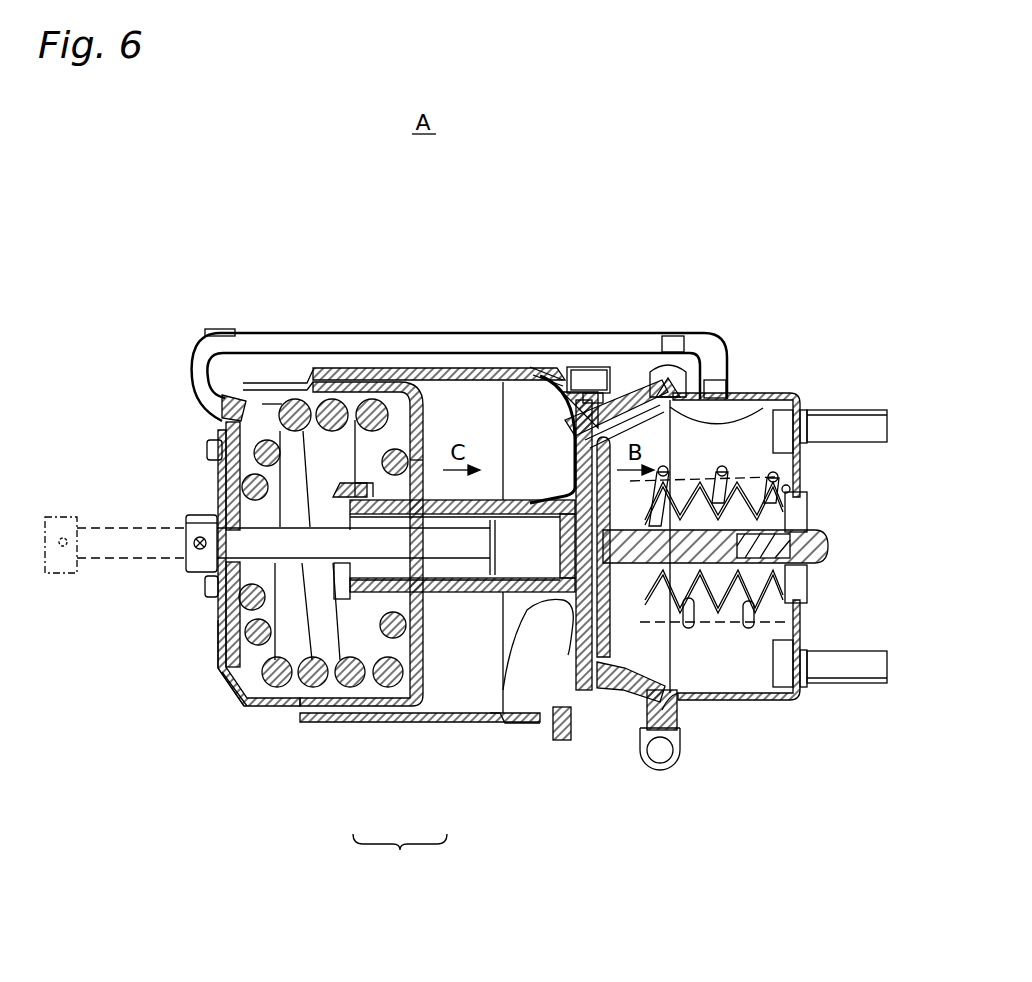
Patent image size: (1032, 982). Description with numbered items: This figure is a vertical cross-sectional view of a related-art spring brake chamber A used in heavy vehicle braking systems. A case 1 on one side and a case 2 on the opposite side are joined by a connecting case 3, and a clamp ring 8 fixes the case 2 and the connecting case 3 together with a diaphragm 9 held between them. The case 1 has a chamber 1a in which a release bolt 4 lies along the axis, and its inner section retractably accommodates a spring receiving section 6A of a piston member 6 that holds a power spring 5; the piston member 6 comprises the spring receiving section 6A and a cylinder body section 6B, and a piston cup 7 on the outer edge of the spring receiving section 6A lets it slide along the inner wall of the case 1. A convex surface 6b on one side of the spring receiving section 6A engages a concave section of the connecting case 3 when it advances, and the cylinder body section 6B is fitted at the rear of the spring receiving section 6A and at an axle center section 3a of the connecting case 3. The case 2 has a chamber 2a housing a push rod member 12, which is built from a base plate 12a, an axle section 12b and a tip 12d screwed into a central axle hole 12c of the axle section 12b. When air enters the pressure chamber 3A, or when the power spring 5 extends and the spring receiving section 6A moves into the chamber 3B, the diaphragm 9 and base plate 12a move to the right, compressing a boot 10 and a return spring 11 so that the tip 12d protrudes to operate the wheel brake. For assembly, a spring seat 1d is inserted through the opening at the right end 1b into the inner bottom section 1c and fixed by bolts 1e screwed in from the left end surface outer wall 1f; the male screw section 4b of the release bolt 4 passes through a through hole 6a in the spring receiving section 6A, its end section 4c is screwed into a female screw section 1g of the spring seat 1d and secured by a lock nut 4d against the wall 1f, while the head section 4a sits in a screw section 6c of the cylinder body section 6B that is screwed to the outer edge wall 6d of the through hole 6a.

The case on one side 1 is at (263, 700).
The chamber 1a is at (477, 400).
The right end 1b is at (532, 737).
The inner bottom section 1c is at (241, 690).
The spring seat 1d is at (231, 642).
The bolts 1e is at (210, 450).
The left end surface outer wall 1f is at (223, 483).
The female screw section 1g is at (221, 605).
The case on the opposite side 2 is at (737, 701).
The chamber 2a is at (731, 453).
The connecting case 3 is at (541, 362).
The pressure chamber 3A is at (612, 366).
The chamber on one side 3B is at (517, 393).
The axle center section 3a is at (520, 645).
The release bolt 4 is at (286, 556).
The head section 4a is at (495, 593).
The male screw section 4b is at (327, 705).
The end section 4c is at (184, 540).
The lock nut 4d is at (203, 523).
The power spring 5 is at (233, 693).
The piston member 6 is at (361, 653).
The spring receiving section 6A is at (417, 700).
The cylinder body section 6B is at (429, 700).
The through hole 6a is at (337, 490).
The surface on one side 6b is at (425, 465).
The screw section 6c is at (271, 402).
The outer edge wall 6d is at (362, 485).
The piston cup 7 is at (303, 432).
The clamp ring 8 is at (688, 720).
The diaphragm 9 is at (752, 418).
The boot 10 is at (640, 732).
The return spring 11 is at (753, 618).
The push rod member 12 is at (689, 569).
The base plate 12a is at (607, 665).
The axle section 12b is at (753, 562).
The central axle hole 12c is at (752, 530).
The tip 12d is at (813, 549).